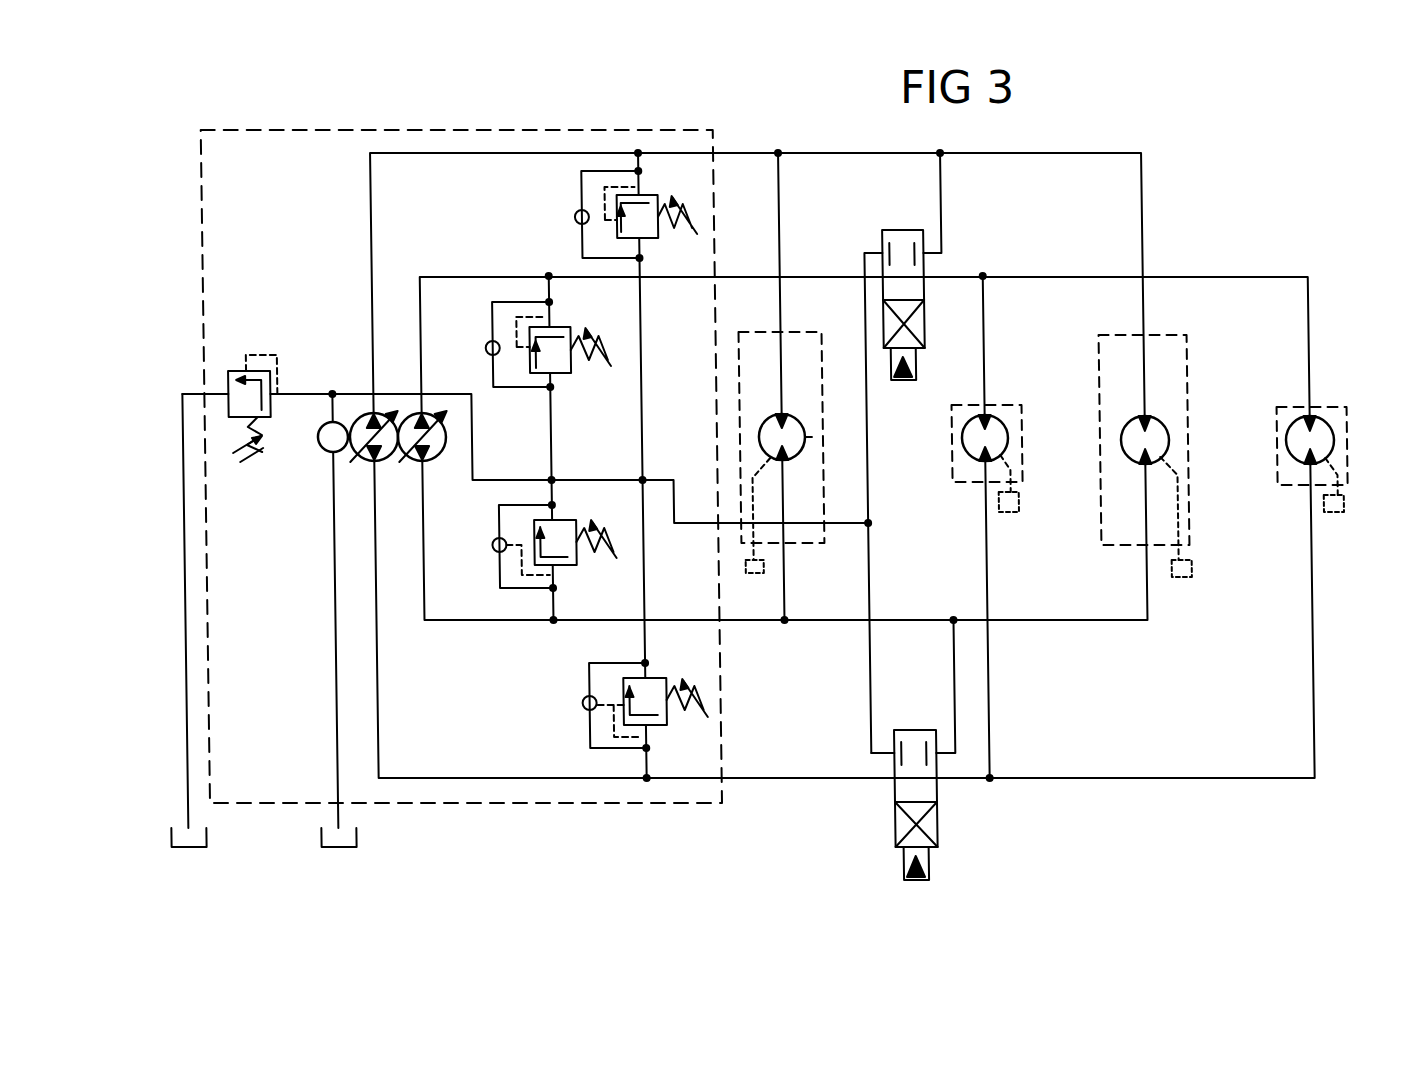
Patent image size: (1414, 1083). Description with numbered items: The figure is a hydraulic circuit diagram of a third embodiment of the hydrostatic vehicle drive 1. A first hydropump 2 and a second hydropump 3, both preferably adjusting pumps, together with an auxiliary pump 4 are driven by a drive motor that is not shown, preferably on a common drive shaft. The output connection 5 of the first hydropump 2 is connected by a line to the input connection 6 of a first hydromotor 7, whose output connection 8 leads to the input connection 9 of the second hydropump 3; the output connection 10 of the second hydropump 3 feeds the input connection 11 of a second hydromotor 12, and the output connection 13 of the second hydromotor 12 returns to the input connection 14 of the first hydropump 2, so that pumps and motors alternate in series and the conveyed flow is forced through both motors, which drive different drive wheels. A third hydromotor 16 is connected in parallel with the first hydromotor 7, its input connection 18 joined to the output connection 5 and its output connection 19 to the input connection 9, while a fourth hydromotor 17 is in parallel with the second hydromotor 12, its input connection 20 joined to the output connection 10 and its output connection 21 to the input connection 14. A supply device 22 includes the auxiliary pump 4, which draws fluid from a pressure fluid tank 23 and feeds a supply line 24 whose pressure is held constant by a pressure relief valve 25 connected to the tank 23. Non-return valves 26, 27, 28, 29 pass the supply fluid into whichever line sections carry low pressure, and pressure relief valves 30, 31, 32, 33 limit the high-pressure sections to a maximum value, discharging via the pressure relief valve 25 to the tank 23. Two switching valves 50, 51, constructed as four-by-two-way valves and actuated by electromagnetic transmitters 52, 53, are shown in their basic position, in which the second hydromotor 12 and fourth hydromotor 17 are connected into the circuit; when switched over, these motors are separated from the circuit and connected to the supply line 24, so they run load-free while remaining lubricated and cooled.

The hydrostatic drive system 1 is at (1204, 200).
The first hydropump 2 is at (388, 463).
The second hydropump 3 is at (407, 409).
The auxiliary pump 4 is at (323, 451).
The output connection 5 is at (374, 410).
The input connection 6 is at (799, 418).
The first hydromotor 7 is at (806, 437).
The output connection 8 is at (776, 459).
The input connection 9 is at (423, 463).
The output connection 10 is at (427, 408).
The input connection 11 is at (988, 410).
The second hydromotor 12 is at (1009, 437).
The output connection 13 is at (985, 465).
The input connection 14 is at (371, 463).
The third hydromotor 16 is at (1170, 440).
The fourth hydromotor 17 is at (1335, 440).
The input connection 18 is at (1150, 415).
The output connection 19 is at (1160, 460).
The input connection 20 is at (1305, 415).
The output connection 21 is at (1308, 465).
The supply device 22 is at (243, 500).
The pressure fluid tank 23 is at (183, 847).
The supply line 24 is at (582, 480).
The pressure relief valve 25 is at (237, 393).
The non-return valve 26 is at (490, 342).
The non-return valve 27 is at (500, 554).
The non-return valve 28 is at (578, 217).
The non-return valve 29 is at (579, 703).
The pressure relief valve 30 is at (560, 375).
The pressure relief valve 31 is at (562, 566).
The pressure relief valve 32 is at (656, 195).
The pressure relief valve 33 is at (656, 727).
The switching valve 50 is at (940, 284).
The switching valve 51 is at (960, 798).
The electromagnetic transmitter 52 is at (915, 360).
The electromagnetic transmitter 53 is at (925, 858).